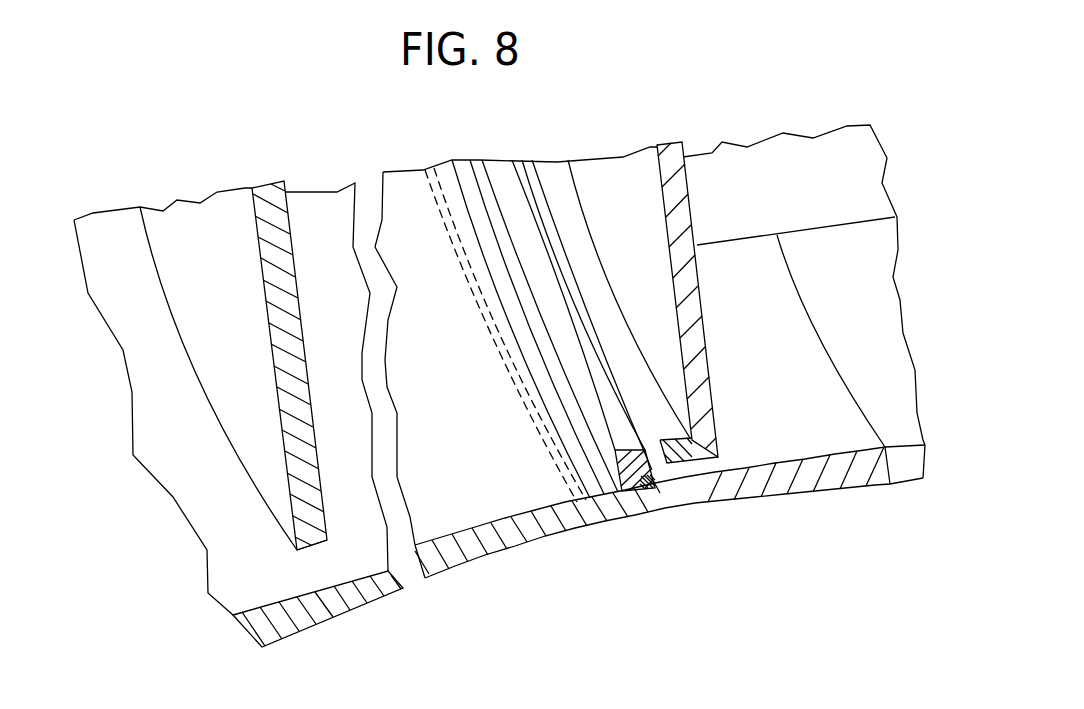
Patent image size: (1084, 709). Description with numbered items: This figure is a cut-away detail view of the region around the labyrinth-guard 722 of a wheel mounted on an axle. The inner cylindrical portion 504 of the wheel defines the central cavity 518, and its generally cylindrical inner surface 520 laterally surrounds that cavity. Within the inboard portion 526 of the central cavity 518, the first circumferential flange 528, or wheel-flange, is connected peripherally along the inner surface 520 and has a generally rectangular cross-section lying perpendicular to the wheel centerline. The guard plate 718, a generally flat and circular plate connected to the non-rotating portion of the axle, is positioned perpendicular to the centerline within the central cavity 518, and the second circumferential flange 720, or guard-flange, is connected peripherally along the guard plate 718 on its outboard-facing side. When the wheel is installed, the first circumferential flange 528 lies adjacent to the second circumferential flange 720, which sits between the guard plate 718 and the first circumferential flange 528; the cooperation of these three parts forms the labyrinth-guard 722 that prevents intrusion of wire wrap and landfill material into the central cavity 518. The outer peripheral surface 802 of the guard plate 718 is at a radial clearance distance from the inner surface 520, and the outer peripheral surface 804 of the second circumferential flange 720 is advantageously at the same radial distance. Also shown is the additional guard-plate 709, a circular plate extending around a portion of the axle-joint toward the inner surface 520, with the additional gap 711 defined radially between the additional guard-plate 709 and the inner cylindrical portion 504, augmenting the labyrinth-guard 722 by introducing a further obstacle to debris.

The inner cylindrical portion 504 is at (533, 535).
The central cavity 518 is at (784, 332).
The inner surface 520 is at (450, 533).
The inboard portion 526 is at (447, 538).
The first circumferential flange 528 is at (500, 186).
The additional guard-plate 709 is at (277, 258).
The additional gap 711 is at (314, 548).
The guard plate 718 is at (673, 187).
The second circumferential flange 720 is at (560, 195).
The labyrinth-guard 722 is at (658, 473).
The outer peripheral surface of the guard plate 802 is at (693, 477).
The outer peripheral surface of the second circumferential flange 804 is at (673, 487).